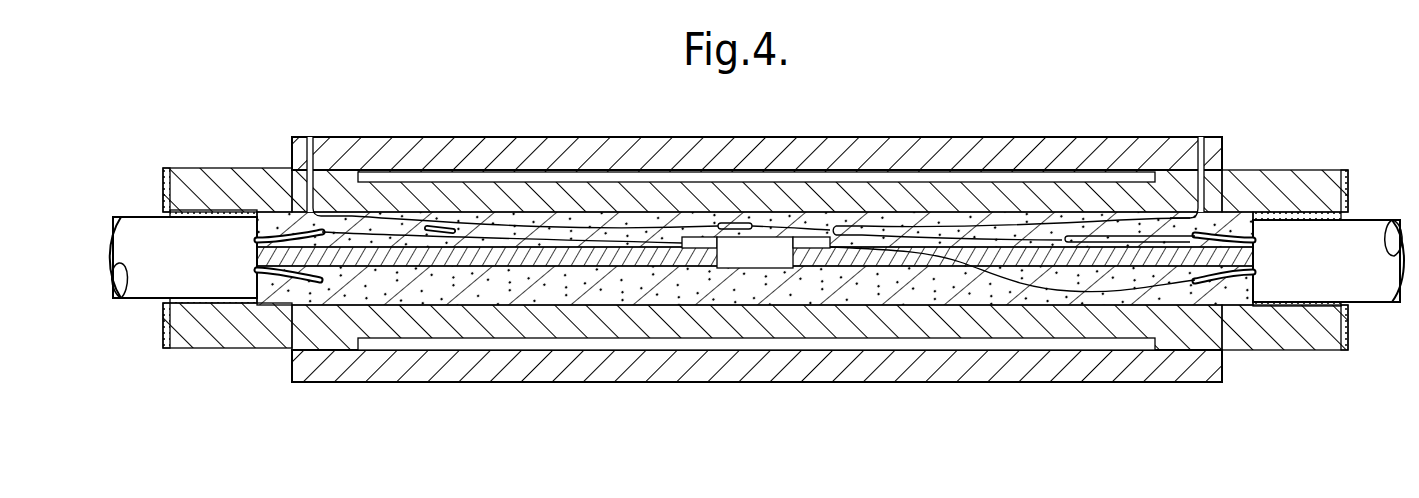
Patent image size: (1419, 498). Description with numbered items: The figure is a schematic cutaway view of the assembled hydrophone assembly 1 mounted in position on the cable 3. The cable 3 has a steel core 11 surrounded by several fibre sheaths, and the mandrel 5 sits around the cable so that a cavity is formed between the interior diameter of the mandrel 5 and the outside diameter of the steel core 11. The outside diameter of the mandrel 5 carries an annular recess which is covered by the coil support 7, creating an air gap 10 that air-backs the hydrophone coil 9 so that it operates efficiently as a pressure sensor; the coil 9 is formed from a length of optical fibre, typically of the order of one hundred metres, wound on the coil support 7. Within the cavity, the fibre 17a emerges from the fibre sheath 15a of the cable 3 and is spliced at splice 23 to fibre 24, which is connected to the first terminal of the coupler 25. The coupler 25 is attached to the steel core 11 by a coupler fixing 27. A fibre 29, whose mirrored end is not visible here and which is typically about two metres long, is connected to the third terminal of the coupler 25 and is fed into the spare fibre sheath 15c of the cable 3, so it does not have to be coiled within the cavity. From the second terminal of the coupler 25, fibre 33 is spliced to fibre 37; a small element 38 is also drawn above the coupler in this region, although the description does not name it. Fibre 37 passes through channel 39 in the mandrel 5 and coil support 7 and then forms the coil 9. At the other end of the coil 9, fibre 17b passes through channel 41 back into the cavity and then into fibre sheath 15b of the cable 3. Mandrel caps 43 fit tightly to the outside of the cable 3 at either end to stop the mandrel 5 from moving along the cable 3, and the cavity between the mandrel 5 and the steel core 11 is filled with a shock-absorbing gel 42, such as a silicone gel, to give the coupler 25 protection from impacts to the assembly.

The hydrophone assembly 1 is at (1200, 95).
The cable 3 is at (143, 216).
The mandrel 5 is at (208, 168).
The coil support 7 is at (292, 150).
The hydrophone coil 9 is at (403, 137).
The air gap 10 is at (456, 175).
The steel core 11 is at (860, 268).
The fibre sheath 15a is at (267, 237).
The fibre sheath 15b is at (1238, 235).
The spare fibre sheath 15c is at (1237, 288).
The fibre 17a is at (353, 216).
The fibre 17b is at (1112, 231).
The splice 23 is at (440, 232).
The fibre 24 is at (511, 237).
The coupler 25 is at (695, 237).
The coupler fixing 27 is at (758, 268).
The fibre 29 is at (1115, 297).
The fibre 33 is at (877, 226).
The fibre 37 is at (573, 223).
The connection pad 38 is at (733, 223).
The channel 39 is at (318, 155).
The channel 41 is at (1203, 152).
The shock-absorbing gel 42 is at (940, 297).
The mandrel caps 43 is at (163, 178).